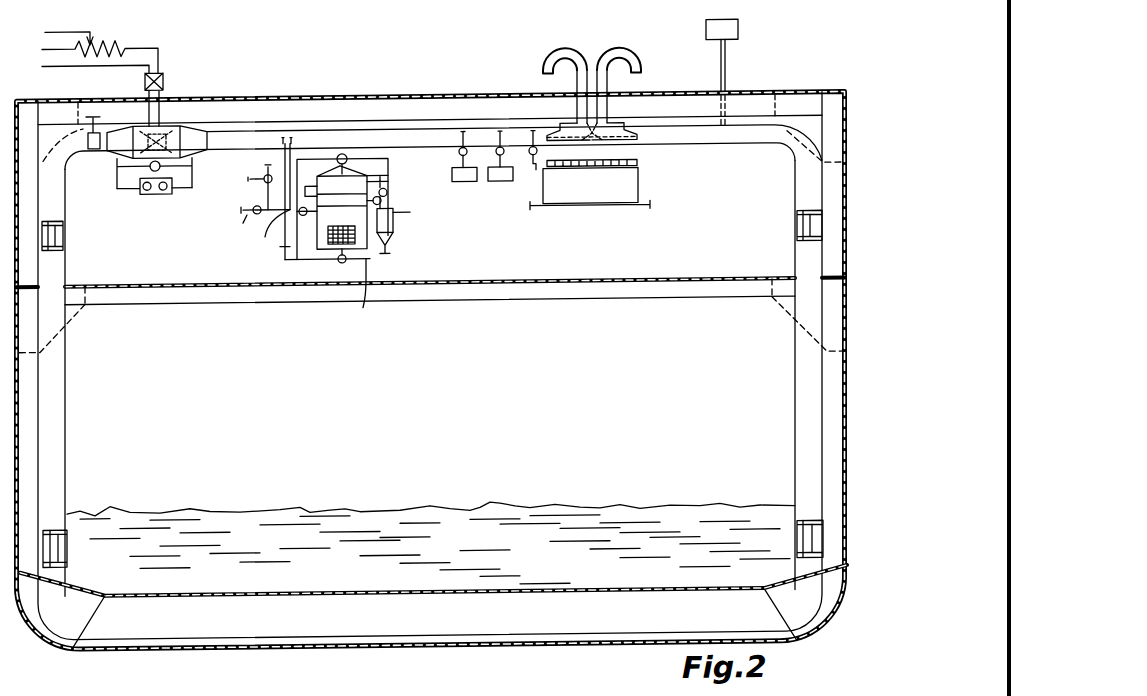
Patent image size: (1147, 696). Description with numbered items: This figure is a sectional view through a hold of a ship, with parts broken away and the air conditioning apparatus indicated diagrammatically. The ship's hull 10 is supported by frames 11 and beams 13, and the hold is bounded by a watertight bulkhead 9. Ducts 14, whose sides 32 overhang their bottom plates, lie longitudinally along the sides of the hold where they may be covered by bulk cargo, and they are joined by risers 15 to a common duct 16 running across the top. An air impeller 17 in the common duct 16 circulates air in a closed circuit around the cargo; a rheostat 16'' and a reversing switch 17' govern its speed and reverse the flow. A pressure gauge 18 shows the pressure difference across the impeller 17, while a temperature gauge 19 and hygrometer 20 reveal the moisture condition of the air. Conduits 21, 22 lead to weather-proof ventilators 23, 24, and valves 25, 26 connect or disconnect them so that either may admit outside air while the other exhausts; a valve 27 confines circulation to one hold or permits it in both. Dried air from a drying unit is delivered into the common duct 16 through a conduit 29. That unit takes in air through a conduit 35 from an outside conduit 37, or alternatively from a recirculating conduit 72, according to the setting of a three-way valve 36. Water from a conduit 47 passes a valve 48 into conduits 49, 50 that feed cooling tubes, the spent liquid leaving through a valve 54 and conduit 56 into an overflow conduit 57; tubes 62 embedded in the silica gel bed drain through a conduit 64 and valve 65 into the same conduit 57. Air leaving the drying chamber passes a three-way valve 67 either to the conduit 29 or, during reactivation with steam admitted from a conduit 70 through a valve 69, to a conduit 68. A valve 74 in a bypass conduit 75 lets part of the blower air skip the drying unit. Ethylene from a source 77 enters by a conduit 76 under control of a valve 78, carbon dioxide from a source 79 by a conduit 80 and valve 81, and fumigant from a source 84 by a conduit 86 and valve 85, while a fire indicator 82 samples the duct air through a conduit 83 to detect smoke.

The watertight bulkhead 9 is at (516, 518).
The ship's hull 10 is at (484, 648).
The frame 11 is at (34, 432).
The beam 13 is at (682, 102).
The duct 14 is at (63, 238).
The riser 15 is at (58, 413).
The common duct 16 is at (442, 145).
The rheostat 16'' is at (100, 37).
The air impeller 17 is at (161, 115).
The reversing switch 17' is at (170, 88).
The pressure gauge 18 is at (150, 168).
The temperature gauge 19 is at (163, 194).
The hygrometer 20 is at (147, 194).
The conduit 21 is at (607, 108).
The conduit 22 is at (577, 108).
The weather-proof ventilator 23 is at (619, 57).
The weather-proof ventilator 24 is at (568, 57).
The valve 25 is at (600, 148).
The valve 26 is at (584, 150).
The valve 27 is at (98, 122).
The conduit 29 is at (292, 156).
The side 32 is at (62, 250).
The conduit 35 is at (298, 264).
The three-way valve 36 is at (338, 266).
The conduit 37 is at (365, 305).
The conduit 47 is at (250, 183).
The valve 48 is at (266, 178).
The conduit 49 is at (243, 212).
The conduit 50 is at (265, 232).
The valve 54 is at (384, 206).
The conduit 56 is at (410, 217).
The conduit 57 is at (390, 253).
The tube 62 is at (380, 180).
The conduit 64 is at (393, 228).
The valve 65 is at (388, 195).
The three-way valve 67 is at (343, 158).
The conduit 68 is at (372, 162).
The valve 69 is at (257, 217).
The conduit 70 is at (247, 218).
The conduit 72 is at (280, 250).
The valve 74 is at (303, 219).
The conduit 75 is at (308, 190).
The conduit 76 is at (459, 172).
The source of ethylene 77 is at (463, 187).
The valve 78 is at (459, 157).
The source of carbon dioxide 79 is at (630, 188).
The conduit 80 is at (536, 176).
The valve 81 is at (531, 153).
The fire indicator 82 is at (722, 30).
The conduit 83 is at (726, 60).
The source of fumigant 84 is at (500, 187).
The valve 85 is at (496, 157).
The conduit 86 is at (501, 170).